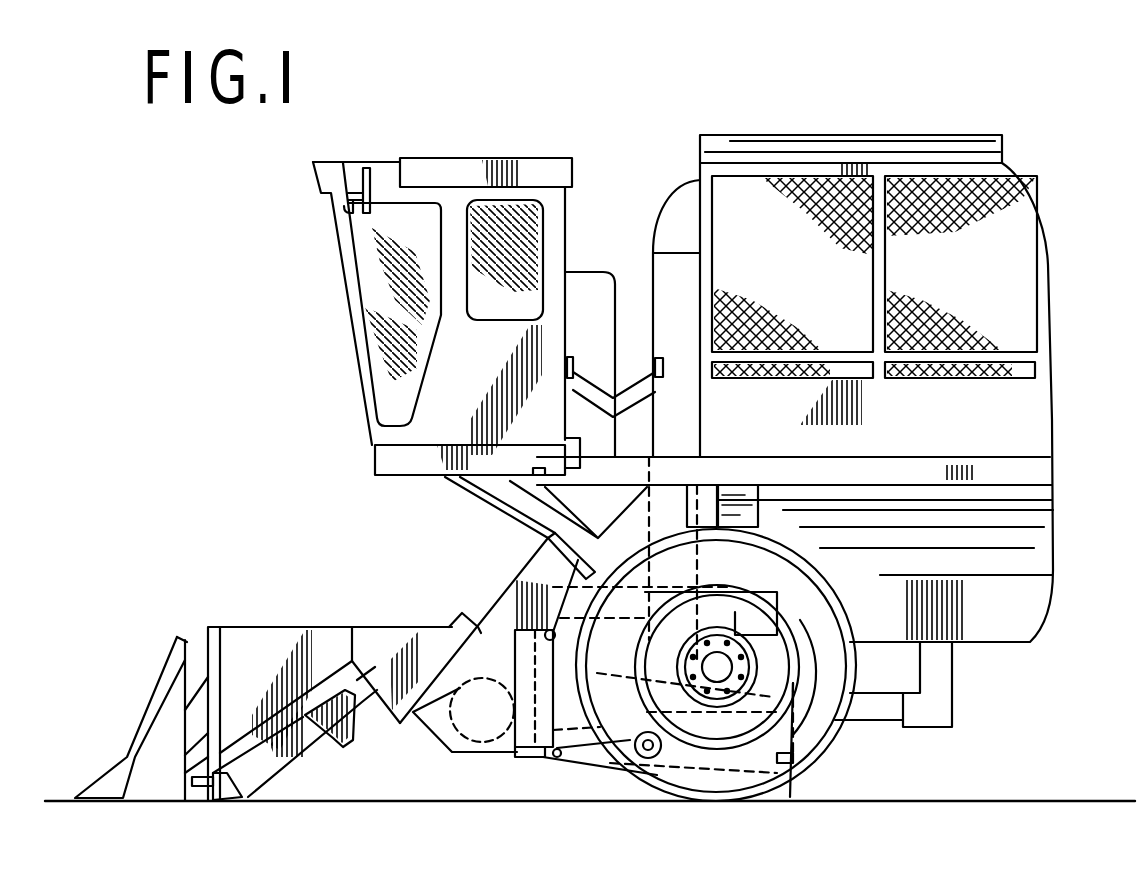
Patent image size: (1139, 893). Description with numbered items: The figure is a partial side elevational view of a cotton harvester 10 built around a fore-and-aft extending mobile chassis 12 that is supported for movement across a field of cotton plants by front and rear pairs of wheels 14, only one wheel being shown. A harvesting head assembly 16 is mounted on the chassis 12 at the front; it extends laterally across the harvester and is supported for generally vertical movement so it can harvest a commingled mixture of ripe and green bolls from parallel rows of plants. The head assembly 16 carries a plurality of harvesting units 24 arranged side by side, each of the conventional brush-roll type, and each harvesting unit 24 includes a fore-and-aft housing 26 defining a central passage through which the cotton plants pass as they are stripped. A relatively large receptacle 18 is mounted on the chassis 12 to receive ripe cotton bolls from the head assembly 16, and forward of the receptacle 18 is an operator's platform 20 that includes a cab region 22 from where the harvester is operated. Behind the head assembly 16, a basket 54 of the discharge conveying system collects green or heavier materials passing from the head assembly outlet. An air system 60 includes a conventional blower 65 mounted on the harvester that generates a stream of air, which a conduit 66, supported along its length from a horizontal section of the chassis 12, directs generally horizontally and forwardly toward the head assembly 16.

The cotton harvester 10 is at (184, 345).
The chassis 12 is at (1037, 560).
The wheels 14 is at (807, 740).
The harvesting head assembly 16 is at (433, 612).
The receptacle 18 is at (1018, 280).
The operator's platform 20 is at (412, 465).
The cab region 22 is at (373, 280).
The harvesting unit 24 is at (245, 627).
The housing 26 is at (308, 642).
The basket 54 is at (577, 779).
The air system 60 is at (870, 688).
The blower 65 is at (957, 622).
The conduit 66 is at (882, 707).